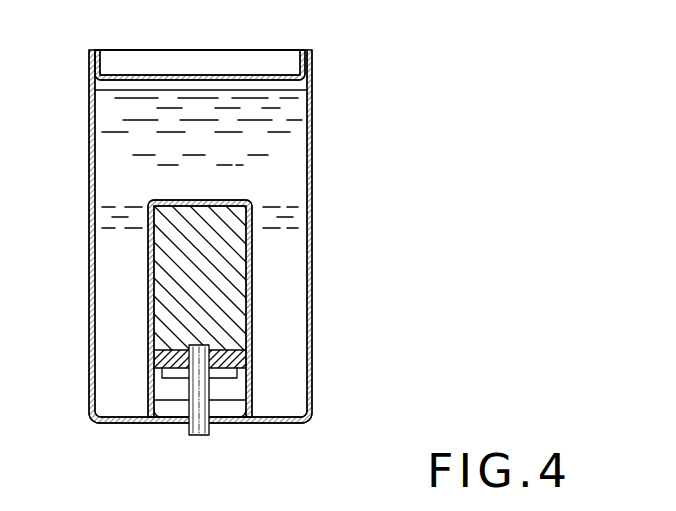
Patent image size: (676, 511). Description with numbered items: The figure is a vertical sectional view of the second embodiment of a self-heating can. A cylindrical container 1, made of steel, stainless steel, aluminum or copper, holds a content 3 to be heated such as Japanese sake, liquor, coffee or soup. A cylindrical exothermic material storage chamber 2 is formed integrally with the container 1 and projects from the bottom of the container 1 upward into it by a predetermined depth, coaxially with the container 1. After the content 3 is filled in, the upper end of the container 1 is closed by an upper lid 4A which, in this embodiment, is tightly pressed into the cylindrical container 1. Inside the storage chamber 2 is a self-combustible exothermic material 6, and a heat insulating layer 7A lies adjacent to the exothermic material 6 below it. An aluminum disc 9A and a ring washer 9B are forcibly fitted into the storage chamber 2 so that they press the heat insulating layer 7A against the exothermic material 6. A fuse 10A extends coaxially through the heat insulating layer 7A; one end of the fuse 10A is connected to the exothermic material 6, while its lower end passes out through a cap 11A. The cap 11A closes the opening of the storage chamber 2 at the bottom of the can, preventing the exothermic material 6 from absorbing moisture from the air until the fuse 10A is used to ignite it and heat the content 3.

The cylindrical container 1 is at (318, 200).
The exothermic material storage chamber 2 is at (255, 272).
The content 3 is at (282, 168).
The upper lid 4A is at (196, 78).
The self-combustible exothermic material 6 is at (168, 255).
The heat insulating layer 7A is at (235, 360).
The aluminum disc 9A is at (164, 375).
The ring washer 9B is at (169, 375).
The fuse 10A is at (200, 437).
The cap 11A is at (234, 419).